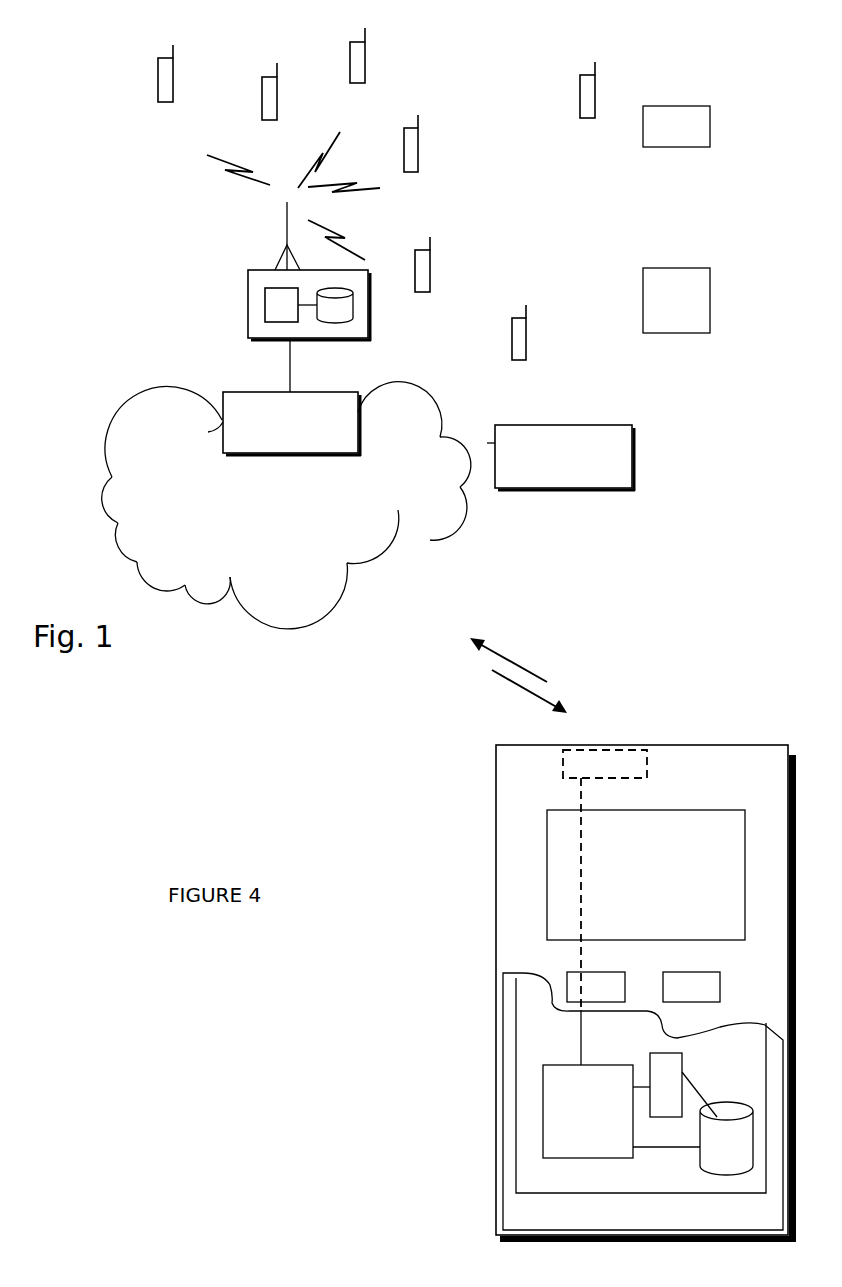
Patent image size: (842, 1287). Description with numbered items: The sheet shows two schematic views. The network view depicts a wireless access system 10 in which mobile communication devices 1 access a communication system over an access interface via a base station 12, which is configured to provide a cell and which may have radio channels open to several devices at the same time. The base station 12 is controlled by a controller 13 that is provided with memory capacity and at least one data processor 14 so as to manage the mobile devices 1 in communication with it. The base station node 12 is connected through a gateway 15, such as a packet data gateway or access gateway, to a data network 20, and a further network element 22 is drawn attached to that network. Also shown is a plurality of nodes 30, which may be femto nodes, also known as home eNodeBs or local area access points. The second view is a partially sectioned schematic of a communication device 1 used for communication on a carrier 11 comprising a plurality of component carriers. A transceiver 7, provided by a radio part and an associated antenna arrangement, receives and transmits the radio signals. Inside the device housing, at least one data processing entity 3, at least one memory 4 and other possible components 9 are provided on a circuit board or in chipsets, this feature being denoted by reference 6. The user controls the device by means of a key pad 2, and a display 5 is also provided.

In FIG. 1, the mobile communication device 1 is at (422, 270).
In FIG. 4, the mobile communication device 1 is at (498, 785).
In FIG. 4, the key pad 2 is at (570, 985).
In FIG. 4, the data processing entity 3 is at (550, 1097).
In FIG. 4, the memory 4 is at (720, 1150).
In FIG. 4, the display 5 is at (565, 862).
In FIG. 4, the circuit board 6 is at (543, 1177).
In FIG. 4, the transceiver 7 is at (588, 763).
In FIG. 4, the other components 9 is at (667, 1070).
In FIG. 1, the wireless access system 10 is at (134, 218).
In FIG. 4, the carrier 11 is at (483, 648).
In FIG. 1, the base station 12 is at (283, 237).
In FIG. 1, the controller 13 is at (248, 288).
In FIG. 1, the data processor 14 is at (265, 305).
In FIG. 1, the gateway 15 is at (223, 410).
In FIG. 1, the data network 20 is at (135, 457).
In FIG. 1, the server 22 is at (583, 442).
In FIG. 1, the nodes 30 is at (676, 219).